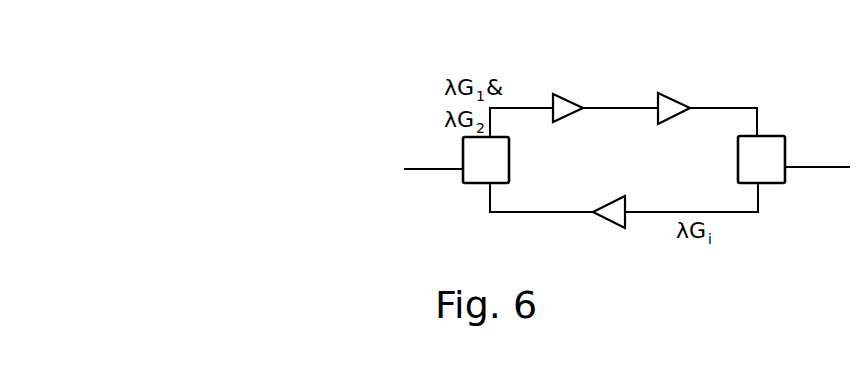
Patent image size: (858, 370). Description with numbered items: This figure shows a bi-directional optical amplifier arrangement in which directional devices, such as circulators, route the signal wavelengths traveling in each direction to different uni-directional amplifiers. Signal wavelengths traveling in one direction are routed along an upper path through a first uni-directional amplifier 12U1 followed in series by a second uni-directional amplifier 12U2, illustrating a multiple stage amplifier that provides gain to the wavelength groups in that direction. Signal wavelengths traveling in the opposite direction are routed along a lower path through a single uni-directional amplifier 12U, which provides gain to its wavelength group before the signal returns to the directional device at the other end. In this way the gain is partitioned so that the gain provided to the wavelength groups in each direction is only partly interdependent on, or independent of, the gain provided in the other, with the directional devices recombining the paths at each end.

The uni-directional amplifier 12U1 is at (554, 93).
The uni-directional amplifier 12U2 is at (672, 95).
The uni-directional amplifier 12U is at (611, 226).